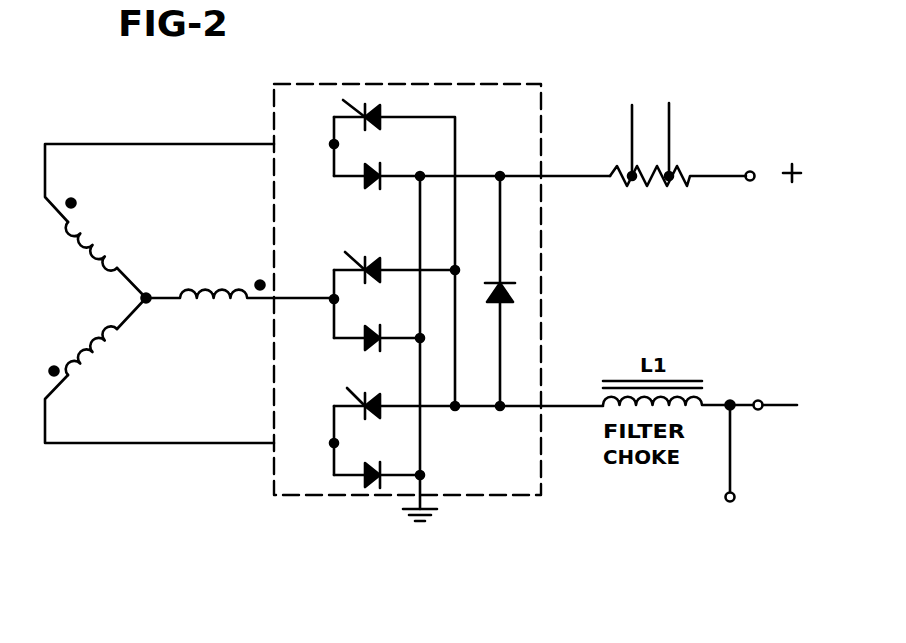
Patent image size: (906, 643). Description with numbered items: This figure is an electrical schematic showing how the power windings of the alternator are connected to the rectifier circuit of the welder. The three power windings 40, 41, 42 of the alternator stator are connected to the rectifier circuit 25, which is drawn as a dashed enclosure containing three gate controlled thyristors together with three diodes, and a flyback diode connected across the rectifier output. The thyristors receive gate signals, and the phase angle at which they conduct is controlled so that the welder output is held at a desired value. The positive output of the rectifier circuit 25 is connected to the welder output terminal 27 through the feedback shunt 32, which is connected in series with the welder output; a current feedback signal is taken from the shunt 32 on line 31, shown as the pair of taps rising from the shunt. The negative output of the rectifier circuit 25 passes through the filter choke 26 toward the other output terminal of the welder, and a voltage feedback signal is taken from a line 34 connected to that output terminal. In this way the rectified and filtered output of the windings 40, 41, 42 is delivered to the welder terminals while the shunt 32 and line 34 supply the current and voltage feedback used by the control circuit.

The rectifier circuit 25 is at (272, 123).
The filter choke 26 is at (758, 410).
The output terminal 27 is at (753, 171).
The line 31 is at (632, 120).
The shunt 32 is at (687, 169).
The line 34 is at (731, 502).
The power winding 40 is at (100, 244).
The power winding 41 is at (207, 300).
The power winding 42 is at (101, 362).